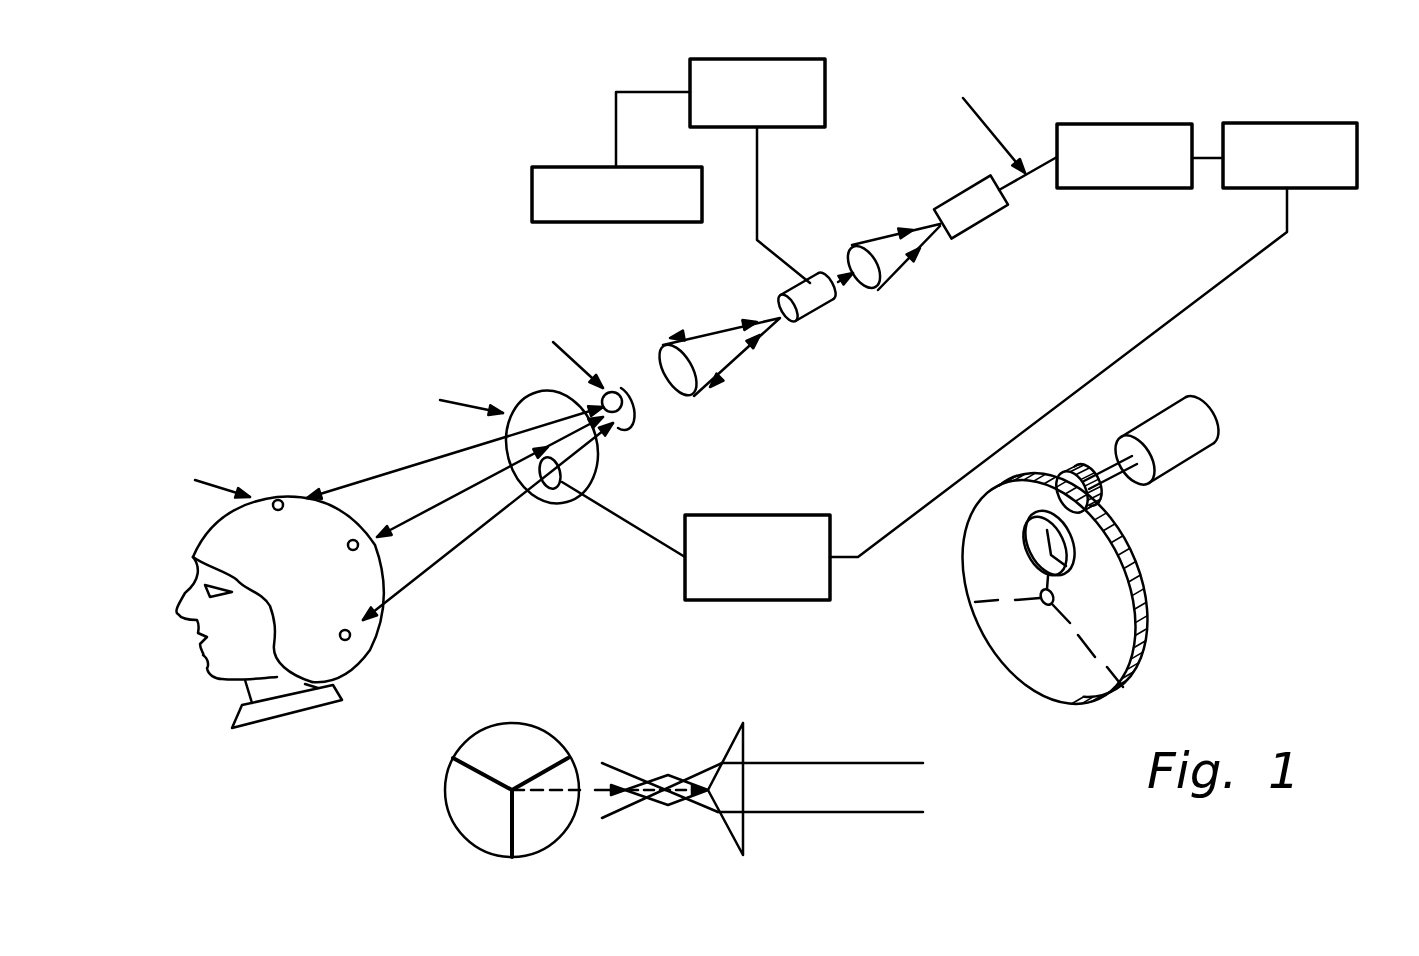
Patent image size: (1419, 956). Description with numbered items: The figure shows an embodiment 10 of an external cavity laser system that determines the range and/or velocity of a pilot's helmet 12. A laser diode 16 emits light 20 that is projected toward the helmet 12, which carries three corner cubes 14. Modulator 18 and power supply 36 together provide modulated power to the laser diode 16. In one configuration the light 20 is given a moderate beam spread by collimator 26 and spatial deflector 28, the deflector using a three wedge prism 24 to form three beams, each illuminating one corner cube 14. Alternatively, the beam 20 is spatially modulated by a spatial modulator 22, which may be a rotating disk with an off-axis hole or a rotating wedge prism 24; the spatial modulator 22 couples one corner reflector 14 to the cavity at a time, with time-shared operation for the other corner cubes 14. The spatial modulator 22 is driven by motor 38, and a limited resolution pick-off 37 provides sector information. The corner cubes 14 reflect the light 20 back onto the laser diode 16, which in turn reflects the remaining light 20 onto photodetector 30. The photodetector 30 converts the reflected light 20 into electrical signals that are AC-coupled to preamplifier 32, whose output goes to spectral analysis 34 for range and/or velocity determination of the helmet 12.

The embodiment 10 is at (420, 195).
The pilot's helmet 12 is at (372, 657).
The corner cube 14 is at (278, 510).
The laser diode 16 is at (778, 302).
The modulator 18 is at (592, 167).
The light 20 is at (437, 505).
The spatial modulator 22 is at (520, 393).
The three wedge prism 24 is at (450, 812).
The collimator 26 is at (702, 338).
The spatial deflector 28 is at (620, 390).
The photodetector 30 is at (938, 207).
The preamplifier 32 is at (1108, 124).
The spectral analysis 34 is at (1285, 123).
The power supply 36 is at (736, 59).
The pick-off 37 is at (830, 595).
The motor 38 is at (1200, 410).